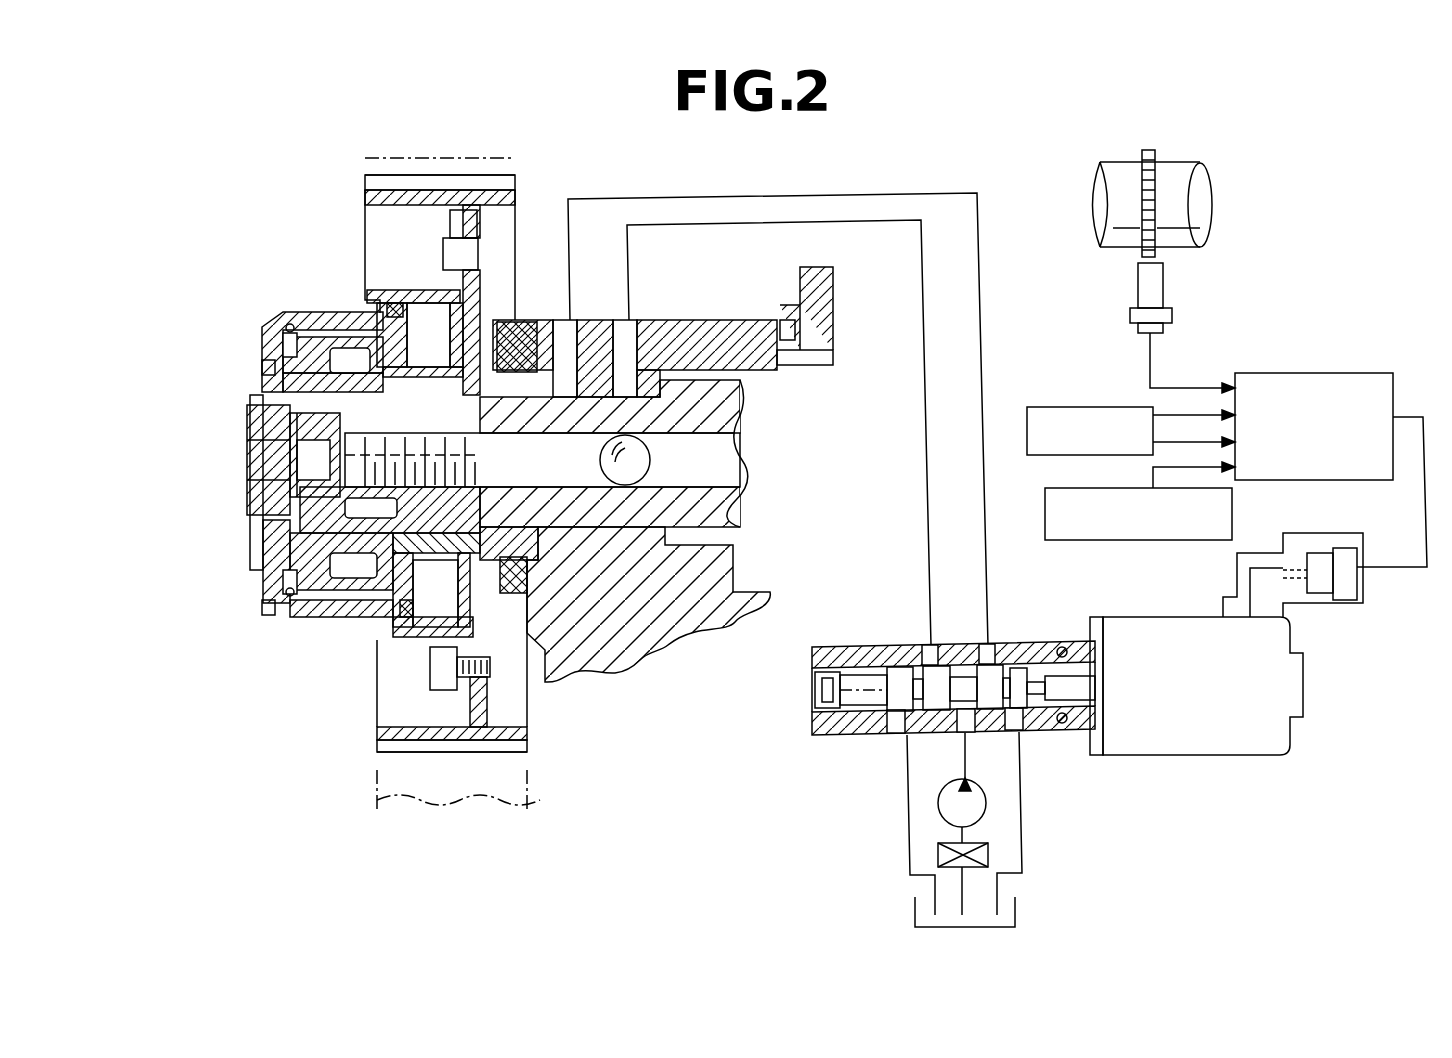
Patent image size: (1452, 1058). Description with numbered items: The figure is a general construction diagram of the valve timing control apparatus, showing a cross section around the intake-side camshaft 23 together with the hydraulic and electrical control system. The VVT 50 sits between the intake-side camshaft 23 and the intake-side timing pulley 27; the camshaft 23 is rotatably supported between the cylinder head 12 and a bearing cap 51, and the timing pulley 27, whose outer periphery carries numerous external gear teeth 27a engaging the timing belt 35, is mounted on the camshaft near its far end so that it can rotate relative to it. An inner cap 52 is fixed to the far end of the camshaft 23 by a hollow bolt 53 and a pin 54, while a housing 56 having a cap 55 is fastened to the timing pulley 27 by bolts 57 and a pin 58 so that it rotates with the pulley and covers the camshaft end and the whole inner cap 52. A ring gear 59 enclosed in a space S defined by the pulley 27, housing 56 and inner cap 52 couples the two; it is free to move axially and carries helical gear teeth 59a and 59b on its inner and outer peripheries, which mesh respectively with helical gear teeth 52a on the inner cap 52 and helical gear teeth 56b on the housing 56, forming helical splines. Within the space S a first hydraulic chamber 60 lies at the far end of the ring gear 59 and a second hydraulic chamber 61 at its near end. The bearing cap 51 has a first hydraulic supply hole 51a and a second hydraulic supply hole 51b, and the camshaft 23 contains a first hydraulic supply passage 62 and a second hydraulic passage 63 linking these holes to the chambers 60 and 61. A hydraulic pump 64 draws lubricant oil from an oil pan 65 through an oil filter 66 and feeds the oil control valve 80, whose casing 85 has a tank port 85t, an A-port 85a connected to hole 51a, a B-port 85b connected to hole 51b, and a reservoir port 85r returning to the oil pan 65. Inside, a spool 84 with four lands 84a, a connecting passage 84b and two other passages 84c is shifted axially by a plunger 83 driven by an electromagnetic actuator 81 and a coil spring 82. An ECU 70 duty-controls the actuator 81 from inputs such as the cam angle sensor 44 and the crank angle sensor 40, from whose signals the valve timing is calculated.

The cylinder head 12 is at (637, 673).
The intake-side camshaft 23 is at (742, 412).
The intake-side timing pulley 27 is at (365, 225).
The external gear teeth 27a is at (500, 178).
The timing belt 35 is at (545, 800).
The crank angle sensor 40 is at (1233, 512).
The cam angle sensor 44 is at (1175, 247).
The VVT 50 is at (890, 192).
The bearing cap 51 is at (818, 360).
The first hydraulic supply hole 51a is at (640, 328).
The second hydraulic supply hole 51b is at (560, 330).
The inner cap 52 is at (263, 557).
The gear teeth 52a is at (340, 350).
The hollow bolt 53 is at (305, 410).
The pin 54 is at (398, 507).
The cap 55 is at (257, 517).
The housing 56 is at (300, 315).
The gear teeth 56b is at (357, 600).
The bolts 57 is at (428, 670).
The pin 58 is at (443, 255).
The ring gear 59 is at (275, 335).
The gear teeth 59a is at (262, 368).
The gear teeth 59b is at (312, 605).
The first hydraulic chamber 60 is at (283, 320).
The second hydraulic chamber 61 is at (376, 465).
The first hydraulic supply passage 62 is at (600, 452).
The second hydraulic passage 63 is at (492, 407).
The hydraulic pump 64 is at (962, 788).
The oil pan 65 is at (1017, 903).
The oil filter 66 is at (990, 855).
The ECU 70 is at (1348, 373).
The oil control valve 80 is at (1218, 770).
The electromagnetic actuator 81 is at (1196, 686).
The coil spring 82 is at (813, 722).
The plunger 83 is at (1103, 688).
The spool 84 is at (893, 677).
The lands 84a is at (897, 680).
The passage 84b is at (945, 673).
The passages 84c is at (958, 712).
The casing 85 is at (827, 647).
The A-port 85a is at (925, 648).
The B-port 85b is at (988, 652).
The reservoir port 85r is at (897, 727).
The tank port 85t is at (957, 727).
The space S is at (420, 310).